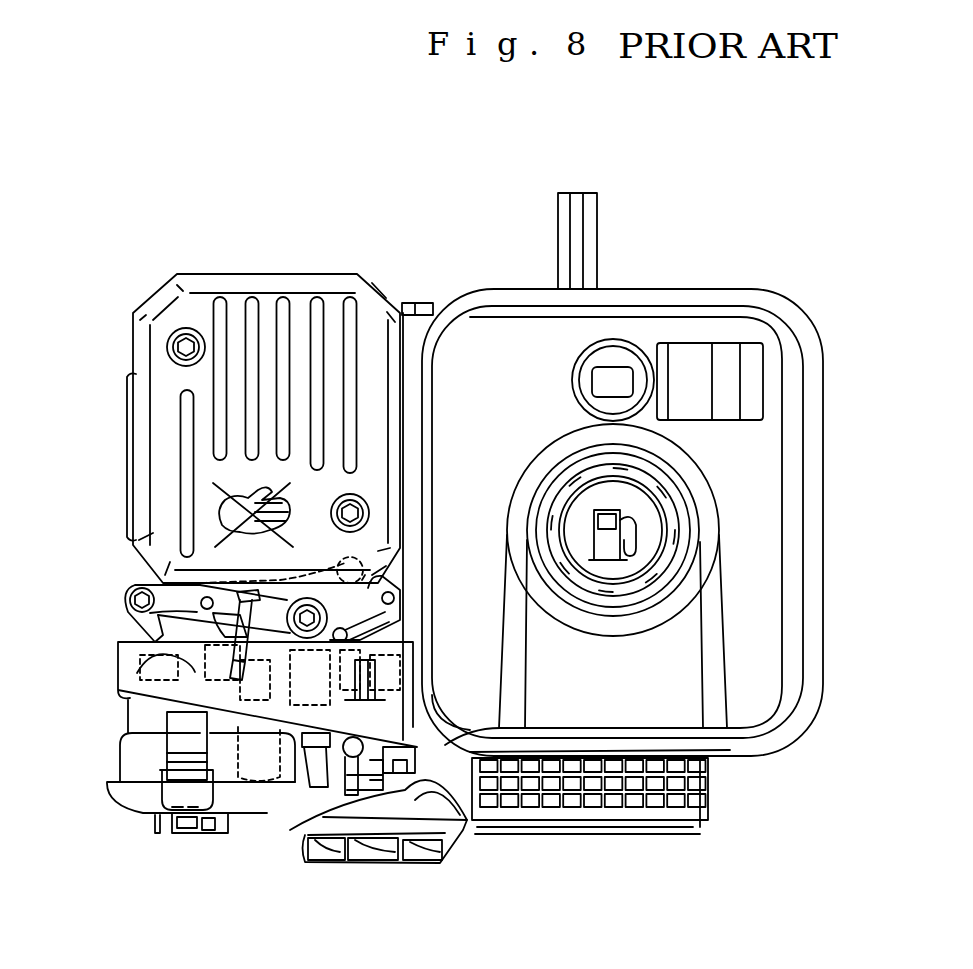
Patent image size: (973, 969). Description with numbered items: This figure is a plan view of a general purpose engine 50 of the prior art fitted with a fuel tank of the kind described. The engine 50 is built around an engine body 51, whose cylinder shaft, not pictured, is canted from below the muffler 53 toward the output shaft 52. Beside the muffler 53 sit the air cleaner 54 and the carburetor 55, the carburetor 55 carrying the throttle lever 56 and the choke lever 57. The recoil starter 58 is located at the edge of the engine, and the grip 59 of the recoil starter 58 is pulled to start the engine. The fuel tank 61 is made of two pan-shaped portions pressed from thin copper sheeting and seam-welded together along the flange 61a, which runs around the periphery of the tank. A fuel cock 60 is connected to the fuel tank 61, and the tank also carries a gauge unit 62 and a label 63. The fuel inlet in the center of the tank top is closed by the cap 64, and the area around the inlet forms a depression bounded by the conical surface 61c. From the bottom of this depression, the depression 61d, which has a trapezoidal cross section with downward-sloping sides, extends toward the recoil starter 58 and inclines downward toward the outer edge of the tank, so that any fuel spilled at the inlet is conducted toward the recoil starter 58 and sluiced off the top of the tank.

The engine 50 is at (386, 216).
The engine body 51 is at (424, 302).
The output shaft 52 is at (595, 232).
The muffler 53 is at (187, 273).
The air cleaner 54 is at (118, 818).
The carburetor 55 is at (133, 622).
The throttle lever 56 is at (297, 788).
The choke lever 57 is at (200, 683).
The recoil starter 58 is at (685, 828).
The grip of the recoil starter 59 is at (462, 857).
The fuel cock 60 is at (350, 797).
The fuel tank 61 is at (631, 326).
The flange 61a is at (820, 373).
The conical surface 61c is at (692, 457).
The depression 61d is at (697, 613).
The gauge unit 62 is at (628, 362).
The label 63 is at (732, 342).
The cap 64 is at (667, 488).